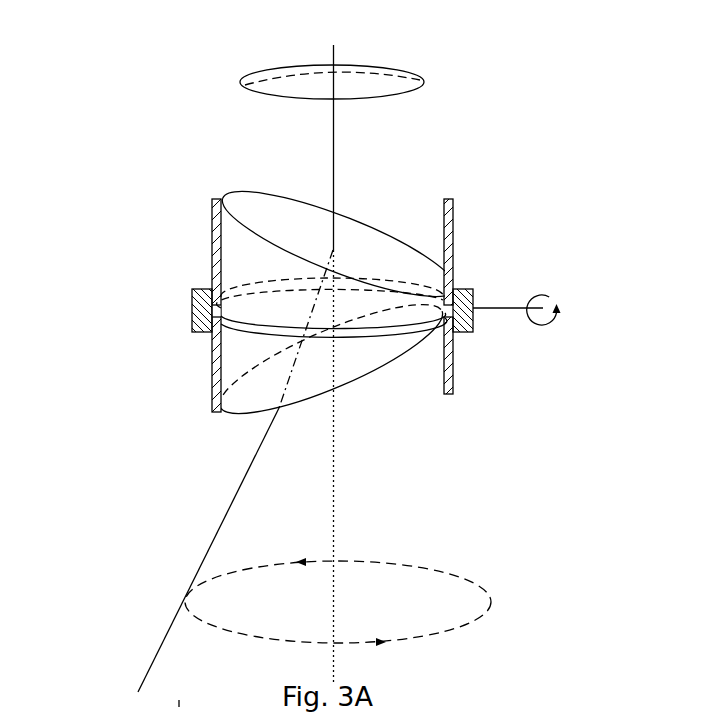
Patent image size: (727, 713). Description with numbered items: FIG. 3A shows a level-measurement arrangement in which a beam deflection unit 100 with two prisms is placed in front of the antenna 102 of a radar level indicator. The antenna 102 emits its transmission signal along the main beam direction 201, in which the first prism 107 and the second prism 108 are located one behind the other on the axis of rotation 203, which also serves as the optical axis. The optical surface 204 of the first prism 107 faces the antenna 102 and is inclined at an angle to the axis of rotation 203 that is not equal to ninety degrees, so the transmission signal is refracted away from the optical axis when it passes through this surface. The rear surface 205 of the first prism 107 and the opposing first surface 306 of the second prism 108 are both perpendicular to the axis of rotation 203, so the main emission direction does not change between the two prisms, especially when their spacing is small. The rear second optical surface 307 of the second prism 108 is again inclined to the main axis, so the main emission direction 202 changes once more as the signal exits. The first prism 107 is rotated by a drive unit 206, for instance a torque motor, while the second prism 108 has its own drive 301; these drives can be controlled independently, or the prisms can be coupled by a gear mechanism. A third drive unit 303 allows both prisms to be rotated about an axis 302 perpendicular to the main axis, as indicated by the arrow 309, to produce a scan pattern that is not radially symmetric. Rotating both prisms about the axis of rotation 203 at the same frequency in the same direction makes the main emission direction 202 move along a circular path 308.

The beam deflection unit 100 is at (160, 306).
The antenna 102 is at (307, 87).
The first prism 107 is at (368, 243).
The second prism 108 is at (373, 363).
The main beam direction 201 is at (334, 128).
The main emission direction 202 is at (150, 665).
The axis of rotation 203 is at (335, 456).
The optical surface 204 is at (262, 213).
The rear surface 205 is at (254, 312).
The drive unit 206 is at (453, 250).
The drive 301 is at (455, 369).
The axis 302 is at (503, 312).
The third drive unit 303 is at (475, 292).
The first surface 306 is at (257, 330).
The rear second optical surface 307 is at (308, 392).
The circular path 308 is at (453, 630).
The arrow 309 is at (543, 327).